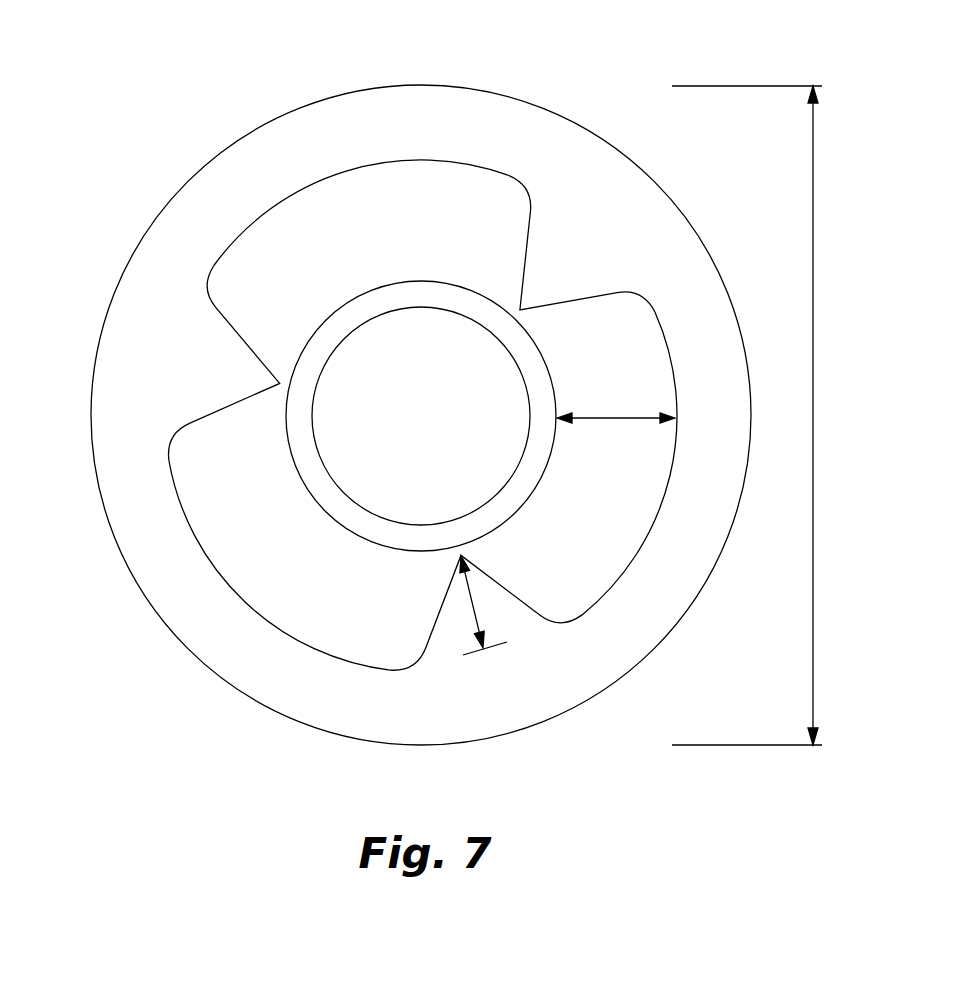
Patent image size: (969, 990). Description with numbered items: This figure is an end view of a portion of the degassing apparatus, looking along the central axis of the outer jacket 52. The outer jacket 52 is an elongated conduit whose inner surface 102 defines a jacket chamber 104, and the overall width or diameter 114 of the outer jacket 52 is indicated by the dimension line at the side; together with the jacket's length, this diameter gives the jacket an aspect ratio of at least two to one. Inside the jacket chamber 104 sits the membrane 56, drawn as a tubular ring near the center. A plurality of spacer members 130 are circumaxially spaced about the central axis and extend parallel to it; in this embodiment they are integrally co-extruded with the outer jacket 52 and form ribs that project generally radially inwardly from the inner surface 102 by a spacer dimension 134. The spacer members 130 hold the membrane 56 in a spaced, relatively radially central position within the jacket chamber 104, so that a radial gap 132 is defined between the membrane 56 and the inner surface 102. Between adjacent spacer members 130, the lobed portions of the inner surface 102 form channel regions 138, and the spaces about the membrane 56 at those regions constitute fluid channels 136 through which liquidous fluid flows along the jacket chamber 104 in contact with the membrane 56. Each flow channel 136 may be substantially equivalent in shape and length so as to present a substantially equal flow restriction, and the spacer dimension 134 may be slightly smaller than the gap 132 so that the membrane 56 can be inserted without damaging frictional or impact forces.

The outer jacket 52 is at (122, 278).
The membrane 56 is at (534, 493).
The inner surface 102 is at (220, 580).
The jacket chamber 104 is at (200, 465).
The width or diameter 114 is at (816, 418).
The spacer members 130 is at (547, 259).
The radial gap 132 is at (618, 422).
The spacer dimension 134 is at (468, 600).
The fluid channels 136 is at (455, 198).
The channel region 138 is at (342, 173).